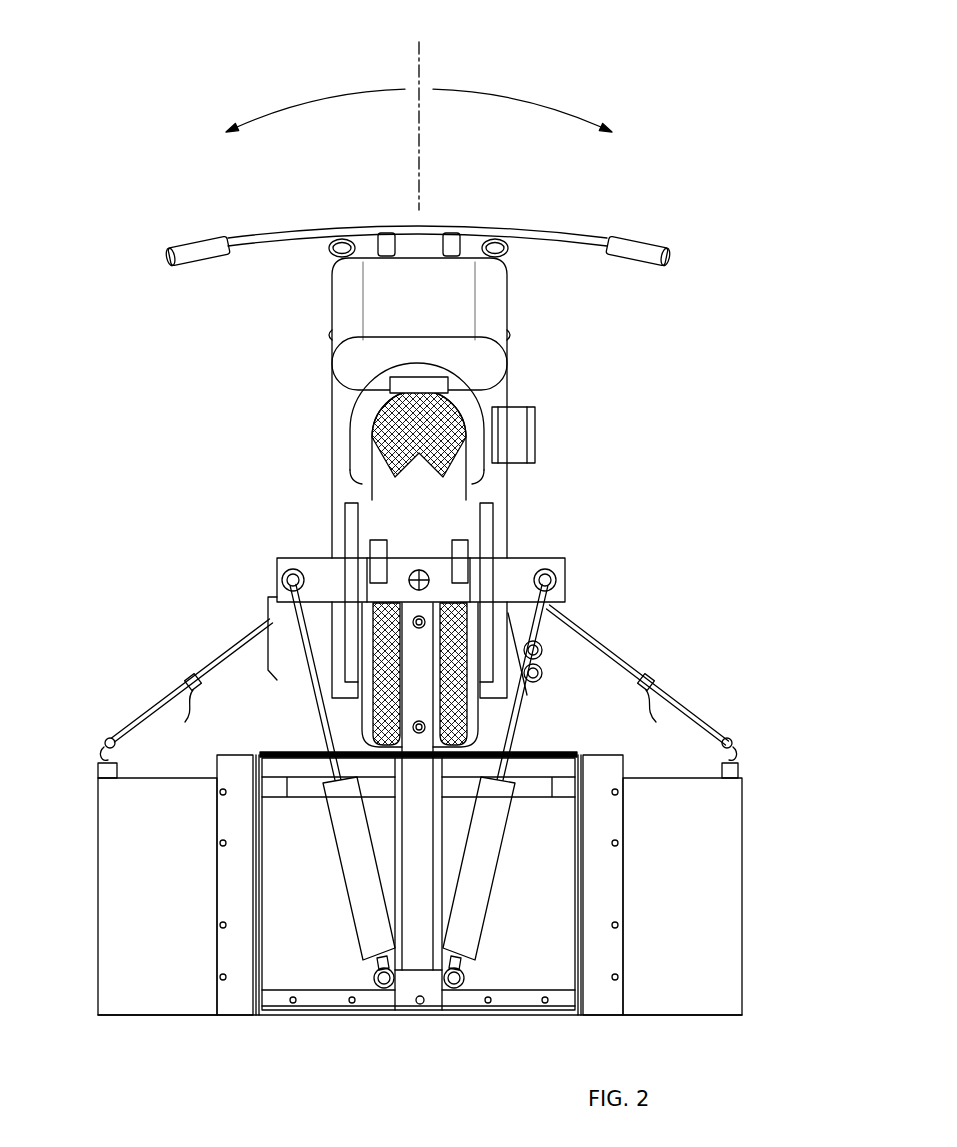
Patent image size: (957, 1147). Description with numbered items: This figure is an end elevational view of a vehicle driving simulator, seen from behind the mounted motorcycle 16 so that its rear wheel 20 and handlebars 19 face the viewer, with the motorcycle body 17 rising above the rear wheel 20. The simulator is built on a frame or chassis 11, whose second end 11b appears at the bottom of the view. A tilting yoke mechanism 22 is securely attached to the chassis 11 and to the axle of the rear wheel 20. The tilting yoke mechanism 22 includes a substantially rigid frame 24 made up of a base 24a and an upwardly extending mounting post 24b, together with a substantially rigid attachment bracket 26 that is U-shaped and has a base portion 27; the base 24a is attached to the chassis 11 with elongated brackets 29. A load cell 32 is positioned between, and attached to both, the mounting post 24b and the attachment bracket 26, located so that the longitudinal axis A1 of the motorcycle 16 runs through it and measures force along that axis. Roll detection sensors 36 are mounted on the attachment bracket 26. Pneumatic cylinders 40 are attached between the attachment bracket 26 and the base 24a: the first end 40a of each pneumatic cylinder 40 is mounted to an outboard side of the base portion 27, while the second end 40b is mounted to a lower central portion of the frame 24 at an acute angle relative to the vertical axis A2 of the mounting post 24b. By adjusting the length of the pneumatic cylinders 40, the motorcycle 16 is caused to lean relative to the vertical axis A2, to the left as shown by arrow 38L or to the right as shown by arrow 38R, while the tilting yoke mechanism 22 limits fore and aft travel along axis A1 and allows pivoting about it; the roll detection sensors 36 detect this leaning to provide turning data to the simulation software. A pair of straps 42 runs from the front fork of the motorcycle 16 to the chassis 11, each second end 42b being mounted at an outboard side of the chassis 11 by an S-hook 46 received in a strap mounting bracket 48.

The chassis 11 is at (752, 865).
The second end 11b is at (740, 1015).
The vehicle 16 is at (150, 315).
The body / power unit 17 is at (338, 493).
The handlebars 19 is at (268, 232).
The rear wheel 20 is at (450, 420).
The tilting yoke mechanism 22 is at (244, 1052).
The frame 24 is at (382, 1037).
The base 24a is at (513, 973).
The mounting post 24b is at (420, 745).
The attachment bracket 26 is at (266, 562).
The base portion 27 is at (523, 568).
The elongated brackets 29 is at (230, 893).
The load cell 32 is at (412, 571).
The roll detection sensors 36 is at (377, 550).
The arrow 38L is at (297, 99).
The arrow 38R is at (540, 99).
The pneumatic cylinder 40 is at (329, 866).
The first end 40a is at (273, 597).
The second end 40b is at (370, 940).
The straps 42 is at (211, 652).
The second end 42b is at (140, 718).
The S-hook 46 is at (108, 742).
The strap mounting bracket 48 is at (96, 770).
The longitudinal axis A1 is at (427, 572).
The vertical axis A2 is at (419, 52).